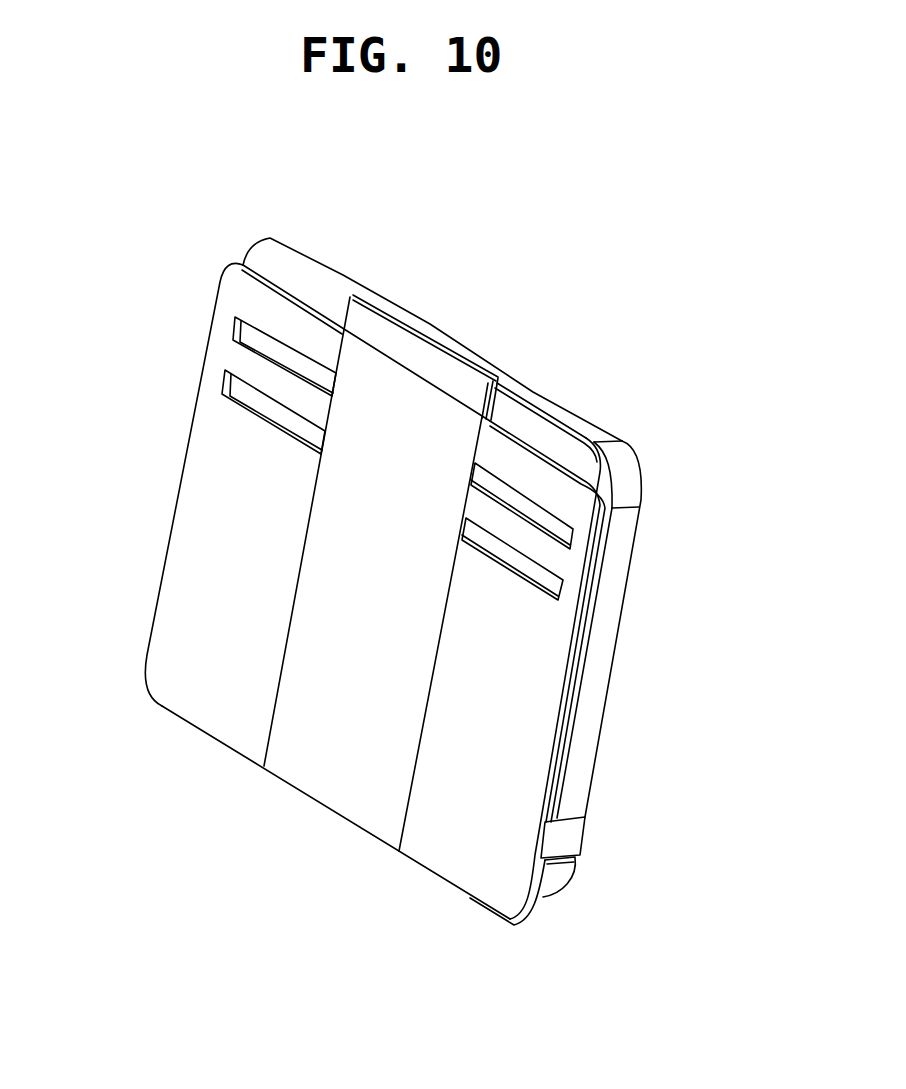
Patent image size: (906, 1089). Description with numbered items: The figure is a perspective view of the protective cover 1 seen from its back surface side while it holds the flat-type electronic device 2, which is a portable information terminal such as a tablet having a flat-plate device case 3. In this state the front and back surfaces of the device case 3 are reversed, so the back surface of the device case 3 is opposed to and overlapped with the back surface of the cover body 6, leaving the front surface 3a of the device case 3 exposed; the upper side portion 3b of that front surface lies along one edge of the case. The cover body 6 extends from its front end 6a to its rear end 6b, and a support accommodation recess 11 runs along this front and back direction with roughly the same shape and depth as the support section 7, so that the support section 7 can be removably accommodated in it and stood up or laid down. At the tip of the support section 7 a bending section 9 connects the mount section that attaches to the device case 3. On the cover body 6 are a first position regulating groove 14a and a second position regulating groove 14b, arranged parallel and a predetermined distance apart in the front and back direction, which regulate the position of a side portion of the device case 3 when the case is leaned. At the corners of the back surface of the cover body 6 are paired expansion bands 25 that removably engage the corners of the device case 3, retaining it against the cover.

The protective cover 1 is at (170, 381).
The electronic device 2 is at (592, 390).
The device case 3 is at (618, 539).
The front surface 3a is at (627, 583).
The upper side portion 3b is at (533, 392).
The cover body 6 is at (195, 479).
The front end 6a is at (442, 880).
The rear end 6b is at (293, 290).
The support section 7 is at (310, 577).
The bending section 9 is at (404, 346).
The support accommodation recess 11 is at (291, 697).
The first position regulating groove 14a is at (535, 514).
The second position regulating groove 14b is at (538, 573).
The expansion bands 25 is at (585, 835).